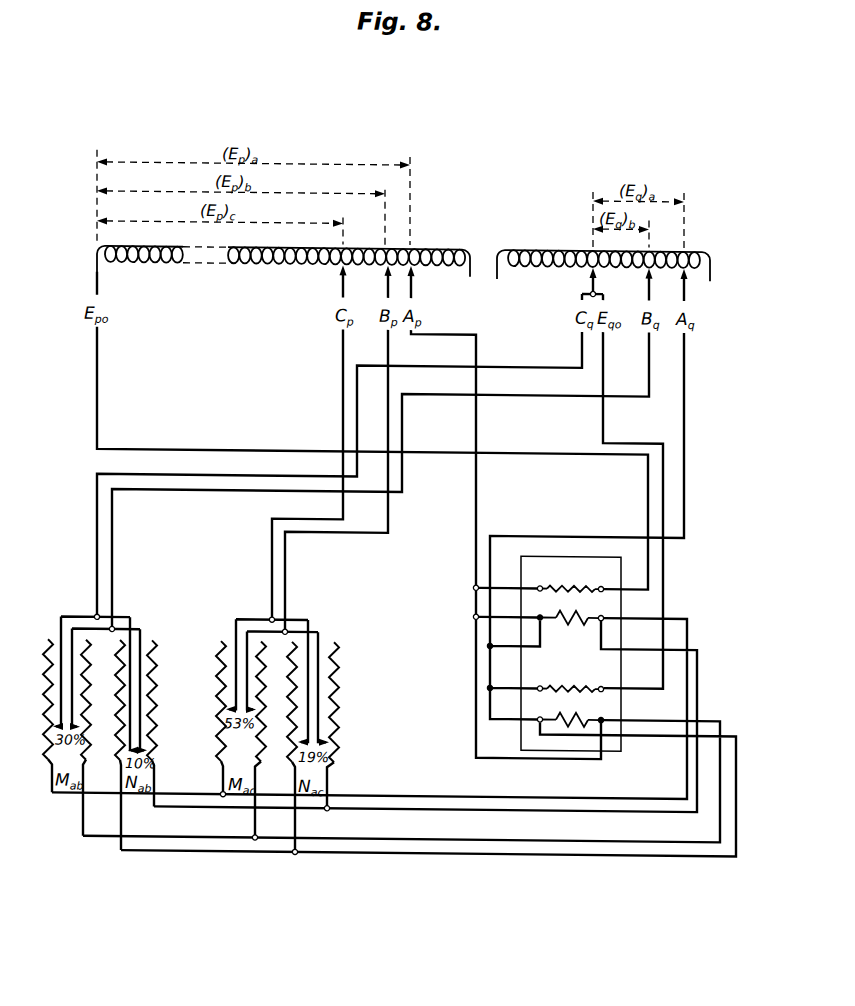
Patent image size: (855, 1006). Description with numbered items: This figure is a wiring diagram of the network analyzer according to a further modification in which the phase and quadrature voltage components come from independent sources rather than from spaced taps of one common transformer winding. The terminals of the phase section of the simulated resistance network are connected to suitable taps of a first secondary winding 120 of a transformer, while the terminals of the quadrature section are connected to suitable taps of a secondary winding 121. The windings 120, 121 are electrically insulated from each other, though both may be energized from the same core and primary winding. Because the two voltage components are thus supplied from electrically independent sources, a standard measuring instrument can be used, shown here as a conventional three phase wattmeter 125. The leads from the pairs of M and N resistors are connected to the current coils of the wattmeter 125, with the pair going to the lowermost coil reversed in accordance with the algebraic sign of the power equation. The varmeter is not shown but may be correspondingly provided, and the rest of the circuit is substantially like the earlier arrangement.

The first secondary winding 120 is at (438, 249).
The secondary winding 121 is at (520, 249).
The three phase wattmeter 125 is at (555, 555).